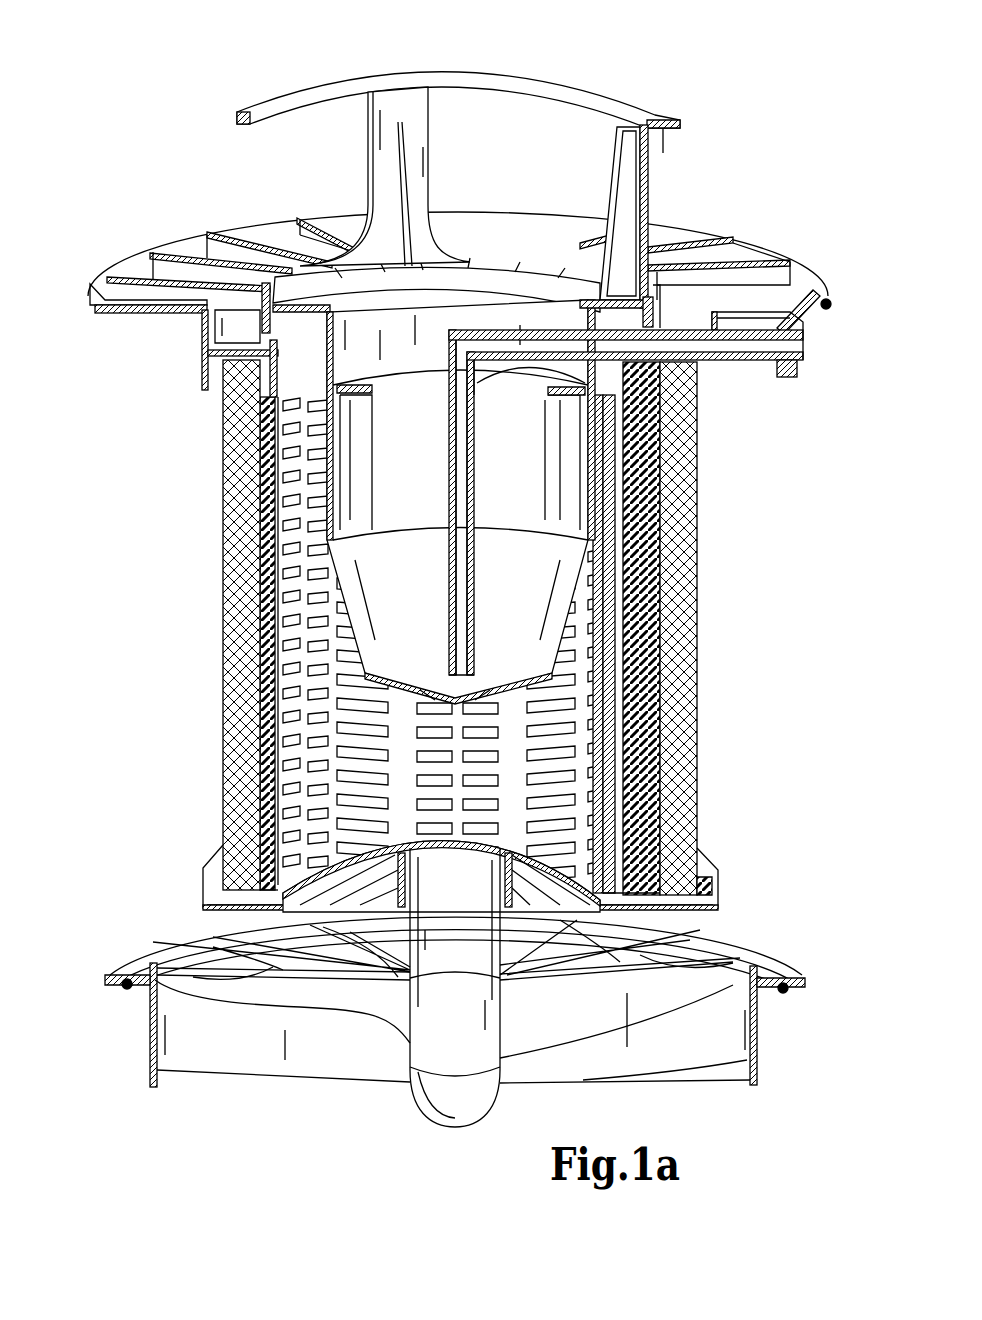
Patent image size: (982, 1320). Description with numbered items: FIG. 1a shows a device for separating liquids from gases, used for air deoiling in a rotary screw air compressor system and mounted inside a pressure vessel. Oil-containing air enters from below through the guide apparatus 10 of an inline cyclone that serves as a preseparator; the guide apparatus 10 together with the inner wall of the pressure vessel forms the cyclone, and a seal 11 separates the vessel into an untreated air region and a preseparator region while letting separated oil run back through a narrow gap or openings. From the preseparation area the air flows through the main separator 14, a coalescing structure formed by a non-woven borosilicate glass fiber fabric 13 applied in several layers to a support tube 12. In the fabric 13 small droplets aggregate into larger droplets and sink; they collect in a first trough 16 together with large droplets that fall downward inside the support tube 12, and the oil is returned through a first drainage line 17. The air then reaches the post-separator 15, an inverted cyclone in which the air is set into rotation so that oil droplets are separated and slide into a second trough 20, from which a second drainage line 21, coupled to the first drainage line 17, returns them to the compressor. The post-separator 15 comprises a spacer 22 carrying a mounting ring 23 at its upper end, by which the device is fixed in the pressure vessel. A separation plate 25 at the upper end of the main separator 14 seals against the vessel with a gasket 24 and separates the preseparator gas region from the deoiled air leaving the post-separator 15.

The guide apparatus 10 is at (258, 1052).
The seal 11 is at (126, 992).
The support tube 12 is at (265, 653).
The non-woven borosilicate glass fiber fabric 13 is at (668, 740).
The main separator 14 is at (212, 580).
The post-separator 15 is at (709, 146).
The first trough 16 is at (708, 884).
The first drainage line 17 is at (625, 578).
The second trough 20 is at (488, 668).
The second drainage line 21 is at (463, 560).
The spacer 22 is at (660, 199).
The mounting ring 23 is at (585, 88).
The gasket 24 is at (828, 310).
The separation plate 25 is at (748, 248).